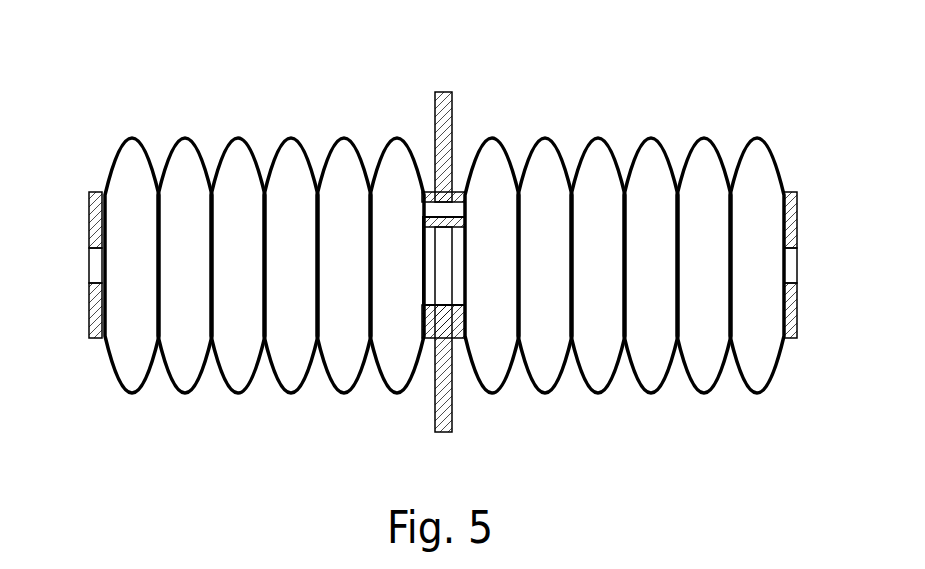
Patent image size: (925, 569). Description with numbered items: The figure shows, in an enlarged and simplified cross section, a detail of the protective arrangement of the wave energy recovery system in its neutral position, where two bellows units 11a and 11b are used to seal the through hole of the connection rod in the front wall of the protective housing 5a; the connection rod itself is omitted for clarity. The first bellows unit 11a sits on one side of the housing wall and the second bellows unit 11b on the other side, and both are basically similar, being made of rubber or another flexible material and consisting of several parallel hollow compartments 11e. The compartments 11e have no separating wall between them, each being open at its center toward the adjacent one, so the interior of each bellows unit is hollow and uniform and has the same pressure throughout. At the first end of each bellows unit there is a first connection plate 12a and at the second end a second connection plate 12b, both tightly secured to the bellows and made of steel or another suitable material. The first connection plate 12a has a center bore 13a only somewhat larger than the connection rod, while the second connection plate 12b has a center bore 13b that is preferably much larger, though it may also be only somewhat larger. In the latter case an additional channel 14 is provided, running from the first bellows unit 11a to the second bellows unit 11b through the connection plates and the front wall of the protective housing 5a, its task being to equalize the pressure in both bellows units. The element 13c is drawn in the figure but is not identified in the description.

The first bellows unit 11a is at (193, 66).
The second bellows unit 11b is at (681, 86).
The hollow compartment 11e is at (233, 375).
The first connection plate 12a is at (97, 330).
The second connection plate 12b is at (428, 193).
The center bore 13a is at (97, 260).
The center bore 13b is at (457, 270).
The connecting rod 13c is at (445, 283).
The additional channel 14 is at (432, 205).
The protective housing 5a is at (443, 123).